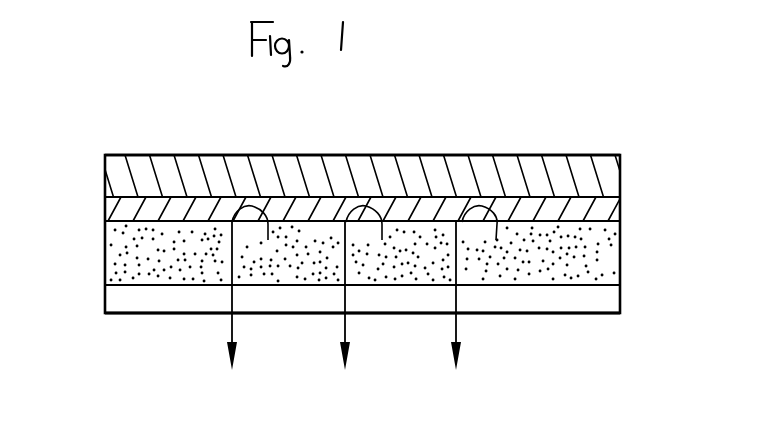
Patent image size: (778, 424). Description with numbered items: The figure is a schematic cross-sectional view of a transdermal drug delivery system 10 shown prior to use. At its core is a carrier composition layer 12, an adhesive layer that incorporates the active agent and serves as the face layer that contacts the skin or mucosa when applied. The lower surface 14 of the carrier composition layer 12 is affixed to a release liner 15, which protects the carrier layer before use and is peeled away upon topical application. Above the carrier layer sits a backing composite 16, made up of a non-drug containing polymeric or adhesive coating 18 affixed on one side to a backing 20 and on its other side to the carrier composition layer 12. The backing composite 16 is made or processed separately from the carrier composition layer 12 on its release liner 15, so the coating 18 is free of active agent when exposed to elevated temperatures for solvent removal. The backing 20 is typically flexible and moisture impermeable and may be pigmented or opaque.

The transdermal drug delivery system 10 is at (79, 149).
The carrier composition layer 12 is at (89, 260).
The surface 14 is at (533, 285).
The release liner 15 is at (170, 317).
The backing composite 16 is at (629, 183).
The polymeric coating 18 is at (620, 212).
The backing layer 20 is at (565, 155).